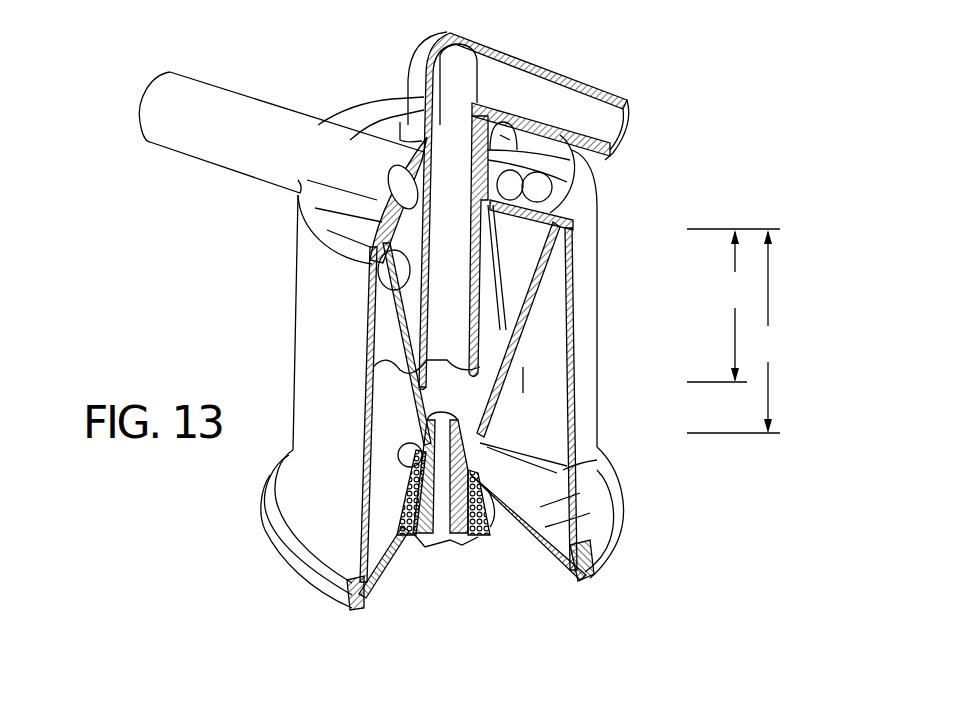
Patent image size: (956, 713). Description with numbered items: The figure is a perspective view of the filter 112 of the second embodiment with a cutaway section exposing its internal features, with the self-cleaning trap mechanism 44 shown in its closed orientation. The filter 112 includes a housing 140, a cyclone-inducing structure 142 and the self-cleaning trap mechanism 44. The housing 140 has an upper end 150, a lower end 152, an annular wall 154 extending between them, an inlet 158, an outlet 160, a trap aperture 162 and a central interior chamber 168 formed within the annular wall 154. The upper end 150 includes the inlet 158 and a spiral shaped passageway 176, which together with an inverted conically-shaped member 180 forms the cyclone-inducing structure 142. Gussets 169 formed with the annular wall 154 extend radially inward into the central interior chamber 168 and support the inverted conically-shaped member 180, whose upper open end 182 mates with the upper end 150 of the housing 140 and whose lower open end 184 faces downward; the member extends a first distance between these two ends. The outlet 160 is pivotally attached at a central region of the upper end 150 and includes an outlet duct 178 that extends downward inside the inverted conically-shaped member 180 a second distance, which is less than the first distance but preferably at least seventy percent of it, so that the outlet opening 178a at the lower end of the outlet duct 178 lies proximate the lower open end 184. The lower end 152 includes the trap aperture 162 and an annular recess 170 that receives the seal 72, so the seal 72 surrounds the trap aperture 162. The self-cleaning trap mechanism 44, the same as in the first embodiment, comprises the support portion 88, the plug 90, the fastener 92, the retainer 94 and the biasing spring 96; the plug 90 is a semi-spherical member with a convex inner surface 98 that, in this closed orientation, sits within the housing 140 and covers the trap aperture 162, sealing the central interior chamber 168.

The self-cleaning trap mechanism 44 is at (496, 603).
The seal 72 is at (574, 577).
The support portion 88 is at (400, 462).
The plug 90 is at (548, 506).
The fastener 92 is at (447, 548).
The retainer 94 is at (417, 545).
The biasing spring 96 is at (492, 512).
The convex inner surface 98 is at (553, 530).
The filter 112 is at (603, 43).
The housing 140 is at (625, 345).
The cyclone-inducing structure 142 is at (368, 328).
The upper end 150 is at (364, 117).
The lower end 152 is at (292, 567).
The annular wall 154 is at (583, 310).
The inlet 158 is at (212, 102).
The outlet 160 is at (631, 102).
The trap aperture 162 is at (590, 575).
The central interior chamber 168 is at (547, 363).
The gussets 169 is at (385, 434).
The annular recess 170 is at (362, 598).
The spiral shaped passageway 176 is at (568, 200).
The outlet duct 178 is at (450, 240).
The outlet opening 178a is at (395, 378).
The inverted conically-shaped member 180 is at (395, 397).
The upper open end 182 is at (390, 297).
The lower open end 184 is at (520, 443).